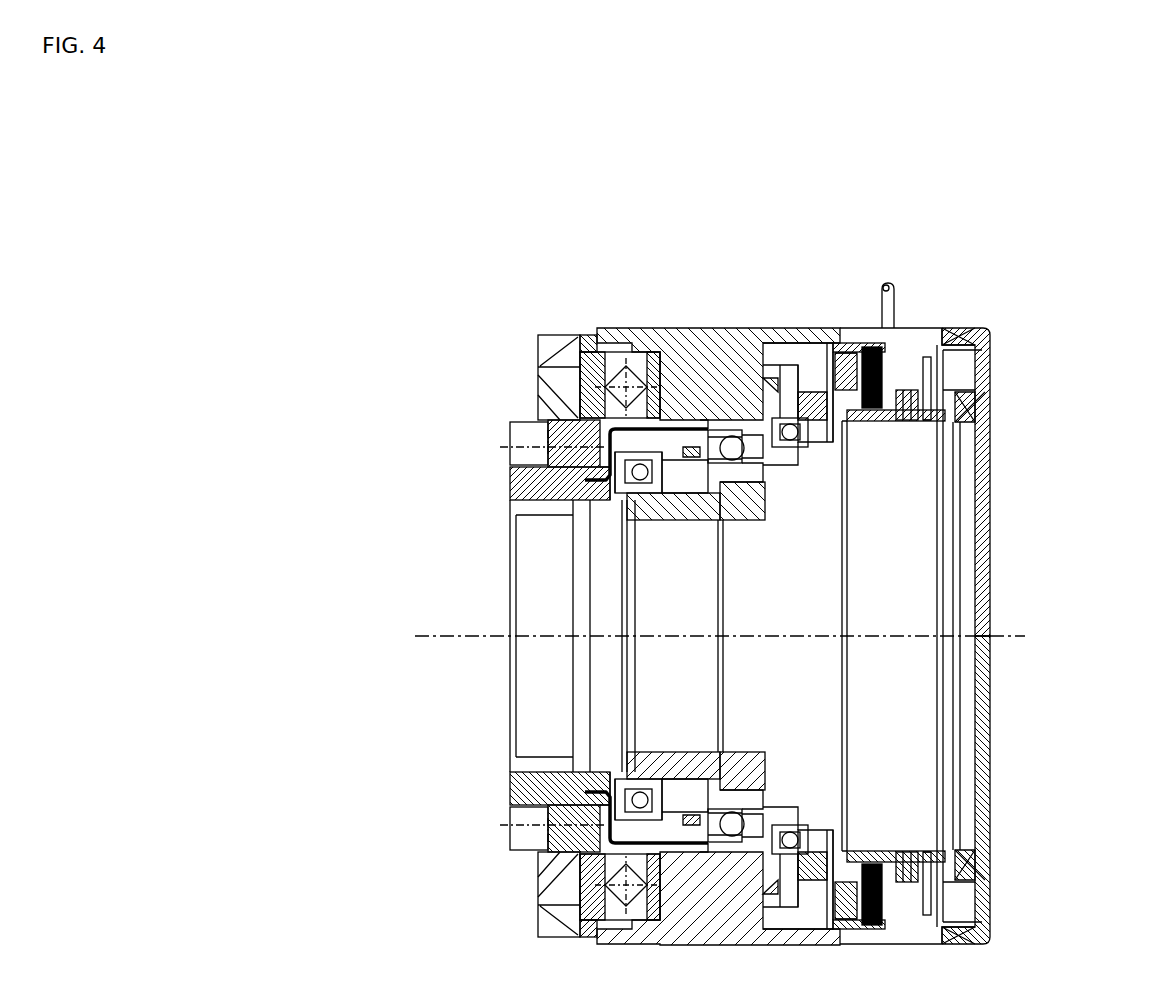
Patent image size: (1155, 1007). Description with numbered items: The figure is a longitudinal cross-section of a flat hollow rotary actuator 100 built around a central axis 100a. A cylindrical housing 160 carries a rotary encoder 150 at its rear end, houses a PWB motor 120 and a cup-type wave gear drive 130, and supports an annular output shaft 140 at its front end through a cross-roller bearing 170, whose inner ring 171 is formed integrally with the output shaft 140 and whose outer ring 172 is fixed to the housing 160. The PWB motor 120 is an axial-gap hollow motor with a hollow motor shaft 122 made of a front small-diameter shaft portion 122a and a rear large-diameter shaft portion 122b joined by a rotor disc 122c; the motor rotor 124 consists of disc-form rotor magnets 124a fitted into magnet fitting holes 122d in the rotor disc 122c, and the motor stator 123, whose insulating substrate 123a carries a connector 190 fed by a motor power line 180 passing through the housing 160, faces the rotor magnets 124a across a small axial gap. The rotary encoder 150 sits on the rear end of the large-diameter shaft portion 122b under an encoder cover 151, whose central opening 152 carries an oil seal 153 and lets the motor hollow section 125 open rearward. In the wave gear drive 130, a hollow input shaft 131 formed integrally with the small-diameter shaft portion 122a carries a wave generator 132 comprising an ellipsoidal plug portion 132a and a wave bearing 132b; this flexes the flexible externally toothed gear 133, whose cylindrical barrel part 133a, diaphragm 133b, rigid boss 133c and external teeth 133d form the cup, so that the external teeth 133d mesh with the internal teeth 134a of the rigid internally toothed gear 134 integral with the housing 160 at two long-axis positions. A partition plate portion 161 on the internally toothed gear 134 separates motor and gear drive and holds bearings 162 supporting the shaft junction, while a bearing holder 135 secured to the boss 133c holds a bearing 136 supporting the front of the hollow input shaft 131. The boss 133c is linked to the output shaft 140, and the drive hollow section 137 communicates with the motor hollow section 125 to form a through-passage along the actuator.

The rotary actuator 100 is at (415, 310).
The central axis 100a is at (433, 628).
The PWB motor 120 is at (874, 300).
The hollow motor shaft 122 is at (1092, 470).
The small-diameter shaft portion 122a is at (845, 435).
The large-diameter shaft portion 122b is at (878, 405).
The rotor disc 122c is at (855, 396).
The magnet fitting holes 122d is at (848, 350).
The motor stator 123 is at (934, 365).
The insulating substrate 123a is at (930, 392).
The motor rotor 124 is at (790, 340).
The rotor magnets 124a is at (814, 388).
The motor hollow section 125 is at (880, 667).
The wave gear drive 130 is at (686, 322).
The hollow input shaft 131 is at (762, 480).
The wave generator 132 is at (655, 495).
The plug portion 132a is at (690, 452).
The wave bearing 132b is at (672, 463).
The flexible externally toothed gear 133 is at (705, 425).
The cylindrical barrel part 133a is at (663, 420).
The diaphragm 133b is at (585, 412).
The boss 133c is at (606, 432).
The external teeth 133d is at (702, 417).
The rigid internally toothed gear 134 is at (720, 425).
The internal teeth 134a is at (752, 470).
The bearing holder 135 is at (583, 502).
The bearing 136 is at (612, 498).
The drive hollow section 137 is at (645, 668).
The output shaft 140 is at (510, 478).
The rotary encoder 150 is at (998, 335).
The encoder cover 151 is at (947, 362).
The central opening 152 is at (985, 414).
The oil seal 153 is at (970, 385).
The housing 160 is at (770, 322).
The partition plate portion 161 is at (766, 372).
The bearings 162 is at (775, 470).
The cross-roller bearing 170 is at (550, 230).
The inner ring 171 is at (578, 405).
The outer ring 172 is at (600, 380).
The motor power line 180 is at (900, 292).
The connector 190 is at (905, 340).